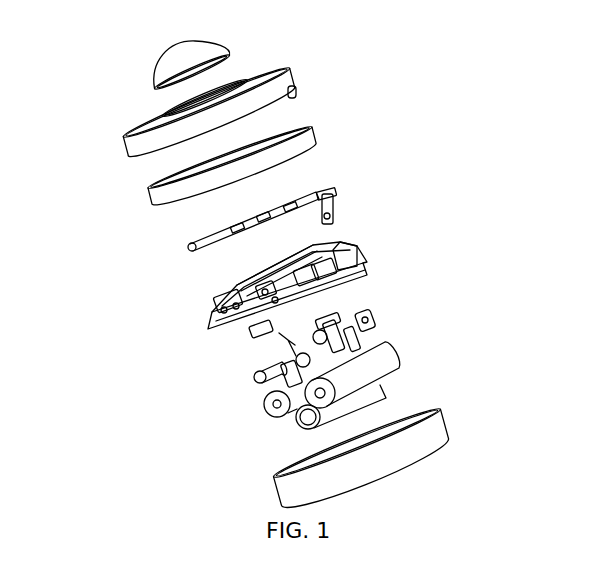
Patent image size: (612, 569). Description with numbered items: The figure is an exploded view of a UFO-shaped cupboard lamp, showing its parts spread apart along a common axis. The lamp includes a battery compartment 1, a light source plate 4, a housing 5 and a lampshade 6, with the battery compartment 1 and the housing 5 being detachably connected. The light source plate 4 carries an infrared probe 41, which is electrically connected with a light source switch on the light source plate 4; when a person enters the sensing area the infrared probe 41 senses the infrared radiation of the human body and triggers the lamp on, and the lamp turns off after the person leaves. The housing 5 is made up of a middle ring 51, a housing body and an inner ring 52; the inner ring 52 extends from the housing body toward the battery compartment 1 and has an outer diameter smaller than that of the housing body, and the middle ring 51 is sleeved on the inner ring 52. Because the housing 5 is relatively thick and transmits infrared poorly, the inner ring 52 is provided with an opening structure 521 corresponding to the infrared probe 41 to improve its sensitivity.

The battery compartment 1 is at (443, 410).
The light source plate 4 is at (197, 250).
The infrared probe 41 is at (336, 212).
The housing 5 is at (290, 69).
The middle ring 51 is at (316, 140).
The inner ring 52 is at (146, 165).
The opening structure 521 is at (297, 95).
The lampshade 6 is at (152, 87).